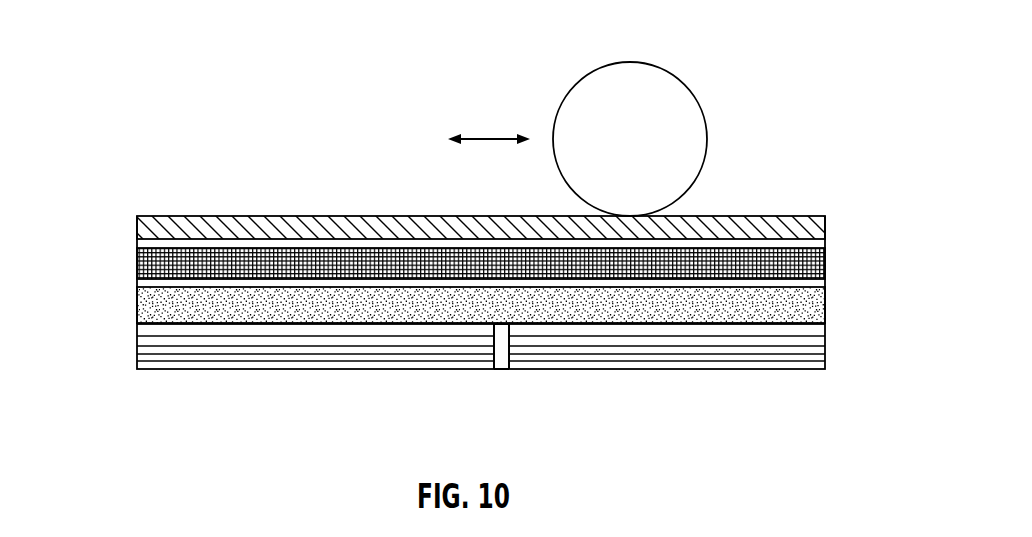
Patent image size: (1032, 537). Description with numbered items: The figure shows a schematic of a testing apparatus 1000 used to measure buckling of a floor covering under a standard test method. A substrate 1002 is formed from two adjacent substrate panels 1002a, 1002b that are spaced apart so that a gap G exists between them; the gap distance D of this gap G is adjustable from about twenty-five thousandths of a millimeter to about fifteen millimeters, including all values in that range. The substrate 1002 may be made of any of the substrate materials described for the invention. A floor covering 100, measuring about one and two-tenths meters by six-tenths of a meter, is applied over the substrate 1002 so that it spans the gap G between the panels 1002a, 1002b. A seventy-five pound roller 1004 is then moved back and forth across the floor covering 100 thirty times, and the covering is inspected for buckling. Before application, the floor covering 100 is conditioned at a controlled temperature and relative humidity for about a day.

The touch sensor system 1000 is at (299, 54).
The test ball / finger 1004 is at (684, 116).
The touch sensor stack 100 is at (136, 323).
The substrate 1002 is at (527, 377).
The first substrate portion 1002a is at (283, 359).
The second substrate portion 1002b is at (725, 359).
The gap G is at (501, 372).
The gap width dimension D is at (463, 386).